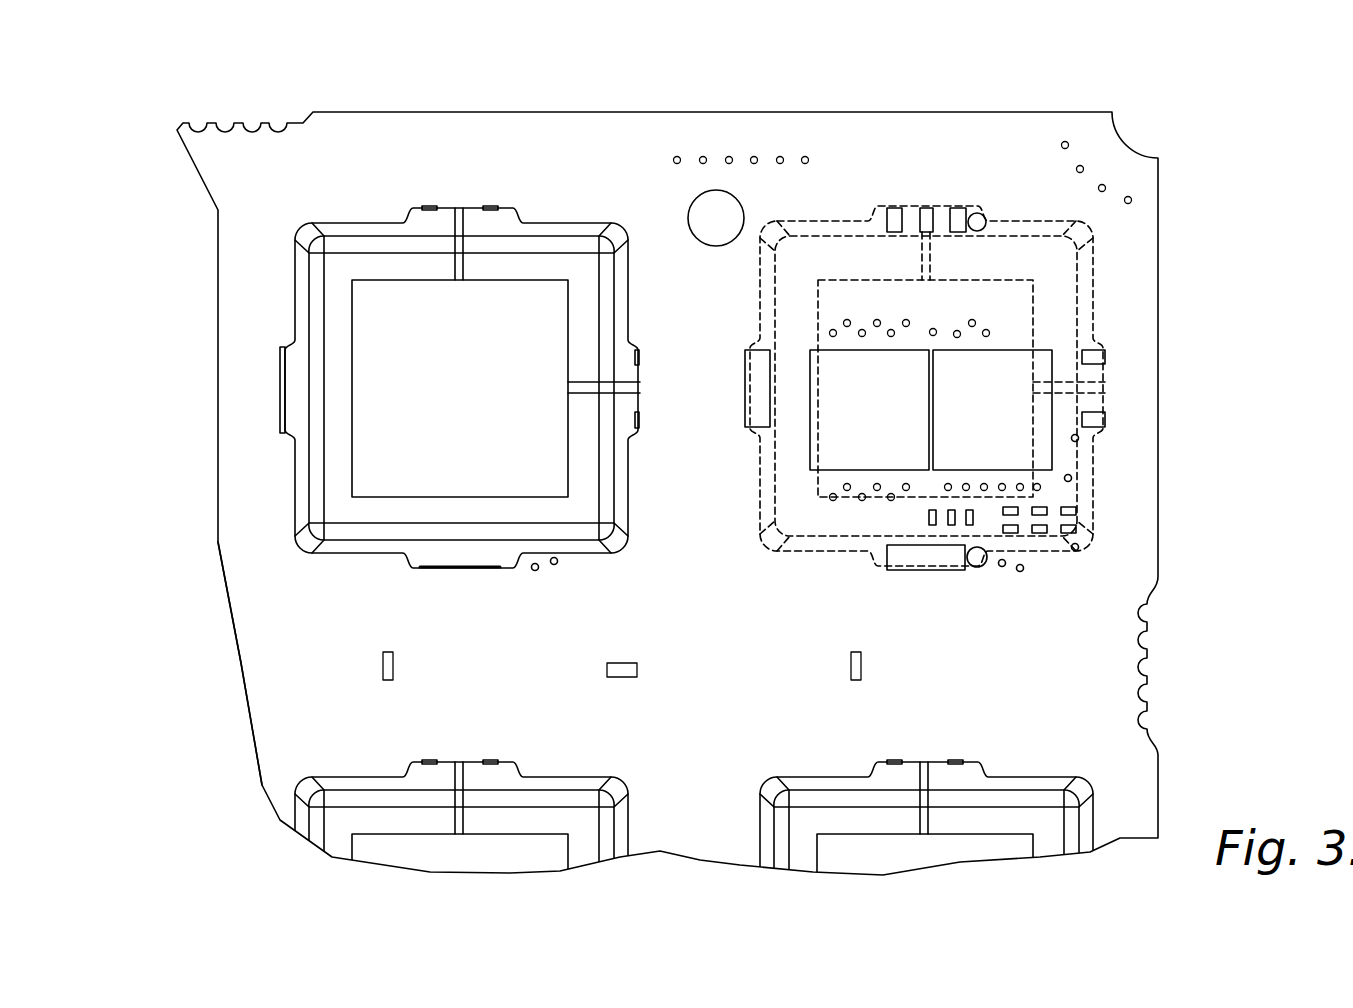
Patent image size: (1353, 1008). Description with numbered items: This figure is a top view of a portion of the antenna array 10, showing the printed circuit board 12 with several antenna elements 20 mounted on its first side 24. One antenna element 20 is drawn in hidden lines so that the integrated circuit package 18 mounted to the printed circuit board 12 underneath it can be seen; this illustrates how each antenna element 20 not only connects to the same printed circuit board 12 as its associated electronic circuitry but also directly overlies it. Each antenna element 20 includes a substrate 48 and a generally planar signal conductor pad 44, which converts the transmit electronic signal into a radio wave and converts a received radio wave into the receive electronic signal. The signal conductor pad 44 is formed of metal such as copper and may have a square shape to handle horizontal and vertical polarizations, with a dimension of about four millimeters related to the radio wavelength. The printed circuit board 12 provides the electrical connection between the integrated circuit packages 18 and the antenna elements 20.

The antenna array 10 is at (1030, 86).
The printed circuit board 12 is at (205, 591).
The integrated circuit package 18 is at (1011, 287).
The antenna element 20 is at (376, 203).
The first side 24 is at (265, 703).
The signal conductor pad 44 is at (540, 480).
The substrate 48 is at (362, 530).